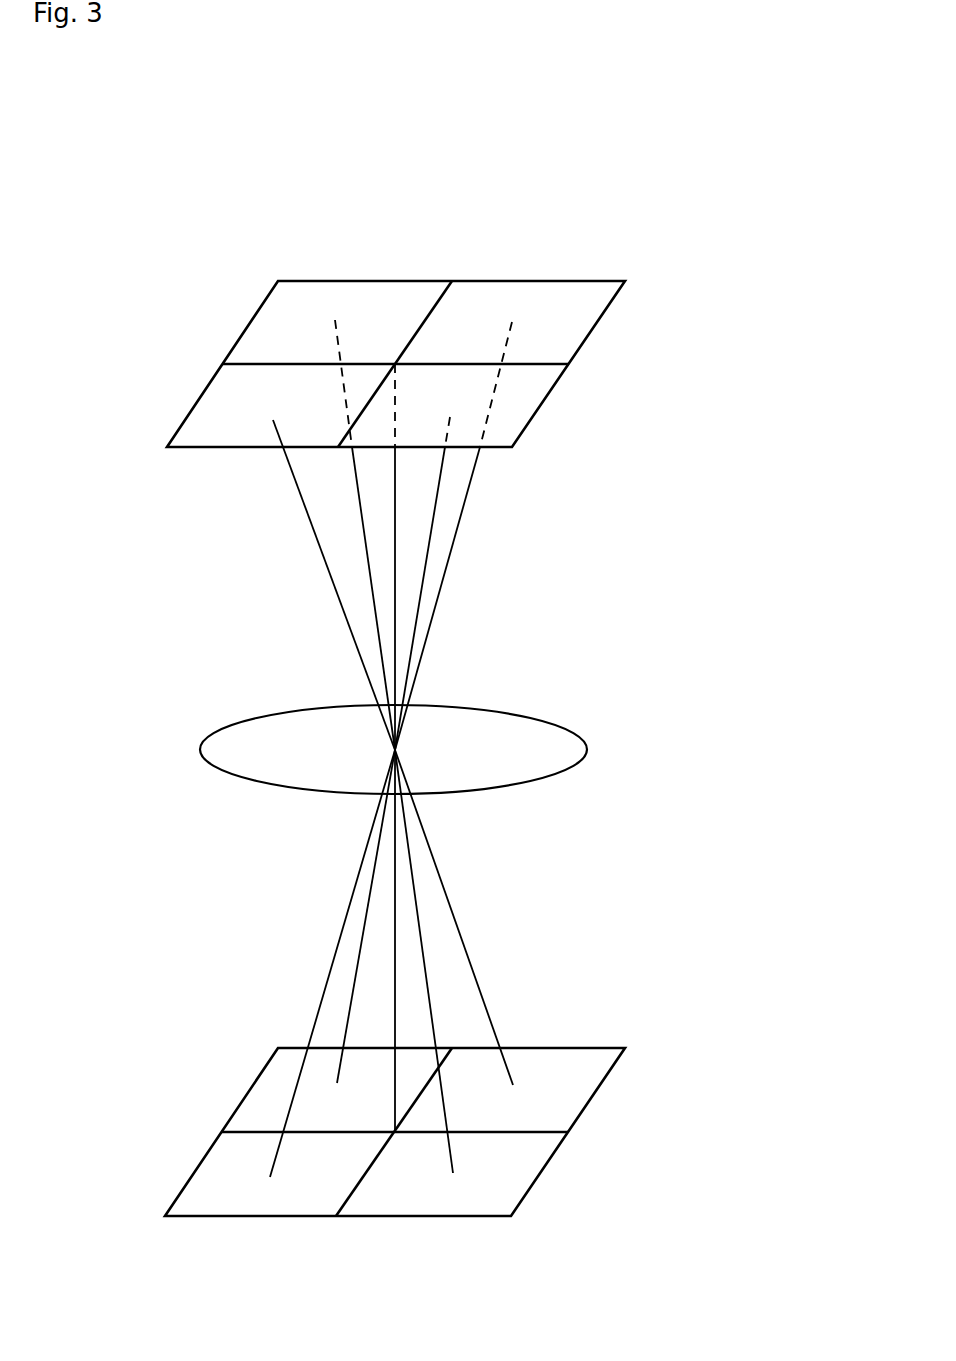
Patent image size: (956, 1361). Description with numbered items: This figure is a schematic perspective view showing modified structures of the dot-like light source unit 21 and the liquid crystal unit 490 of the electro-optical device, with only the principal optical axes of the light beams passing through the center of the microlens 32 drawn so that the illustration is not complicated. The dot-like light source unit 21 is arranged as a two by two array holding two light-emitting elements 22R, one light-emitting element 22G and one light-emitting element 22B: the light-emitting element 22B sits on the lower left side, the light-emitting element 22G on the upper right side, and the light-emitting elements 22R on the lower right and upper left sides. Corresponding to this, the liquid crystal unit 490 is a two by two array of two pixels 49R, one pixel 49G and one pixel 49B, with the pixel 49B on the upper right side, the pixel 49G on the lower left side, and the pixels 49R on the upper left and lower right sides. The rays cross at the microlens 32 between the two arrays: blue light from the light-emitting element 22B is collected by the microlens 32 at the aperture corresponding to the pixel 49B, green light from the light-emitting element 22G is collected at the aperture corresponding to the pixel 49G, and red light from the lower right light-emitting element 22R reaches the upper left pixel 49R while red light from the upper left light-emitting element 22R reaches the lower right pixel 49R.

The liquid crystal unit 490 is at (545, 423).
The pixel 49R is at (283, 320).
The pixel 49G is at (238, 417).
The pixel 49B is at (492, 305).
The microlens 32 is at (558, 752).
The dot-like light source unit 21 is at (548, 1204).
The light-emitting element 22R is at (280, 1092).
The light-emitting element 22G is at (532, 1097).
The light-emitting element 22B is at (263, 1187).